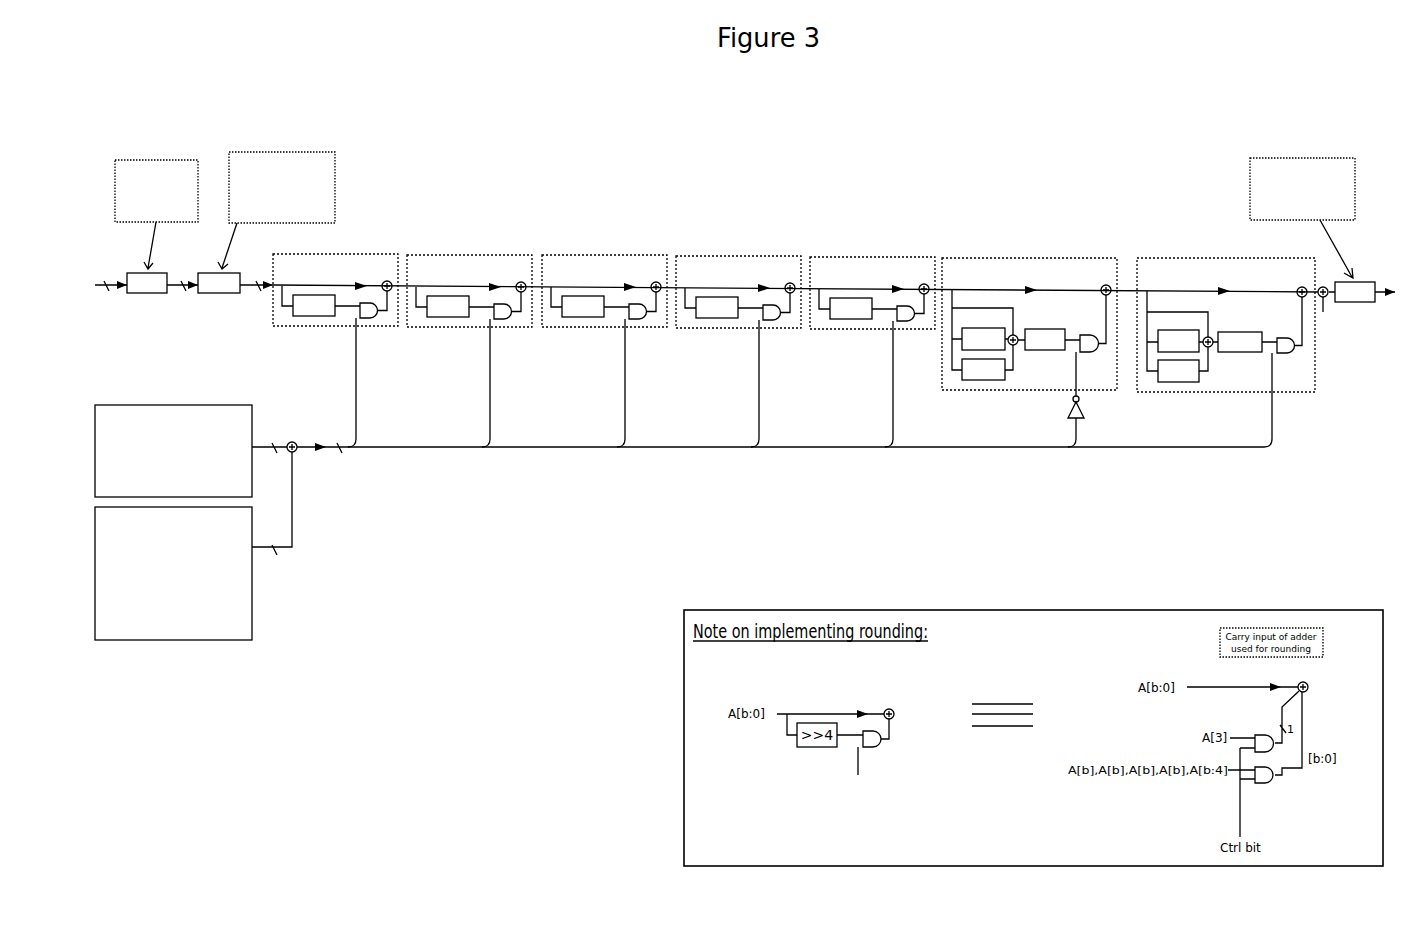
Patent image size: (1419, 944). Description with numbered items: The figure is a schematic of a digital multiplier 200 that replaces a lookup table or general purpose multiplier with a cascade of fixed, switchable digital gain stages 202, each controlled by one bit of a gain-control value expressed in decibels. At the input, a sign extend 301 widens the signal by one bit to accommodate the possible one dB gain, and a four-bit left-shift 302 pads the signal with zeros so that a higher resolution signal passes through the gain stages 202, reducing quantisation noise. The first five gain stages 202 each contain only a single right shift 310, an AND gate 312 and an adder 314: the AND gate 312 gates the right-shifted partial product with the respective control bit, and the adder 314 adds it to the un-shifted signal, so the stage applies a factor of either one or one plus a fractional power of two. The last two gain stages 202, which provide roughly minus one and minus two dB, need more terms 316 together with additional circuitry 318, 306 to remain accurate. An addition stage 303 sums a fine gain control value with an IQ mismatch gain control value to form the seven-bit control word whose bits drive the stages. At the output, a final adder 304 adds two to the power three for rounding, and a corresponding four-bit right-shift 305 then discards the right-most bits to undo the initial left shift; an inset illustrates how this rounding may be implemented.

The digital multiplier 200 is at (468, 108).
The gain stages 202 is at (360, 253).
The sign extend 301 is at (150, 294).
The 4-bit left-shift 302 is at (220, 294).
The addition stage 303 is at (295, 451).
The final adder 304 is at (1322, 286).
The right shift output block 305 is at (1357, 303).
The additional circuitry 306 is at (1086, 410).
The right shift 310 is at (314, 333).
The AND gate 312 is at (384, 338).
The adder 314 is at (416, 255).
The terms 316 is at (1005, 397).
The additional circuitry 318 is at (1016, 346).